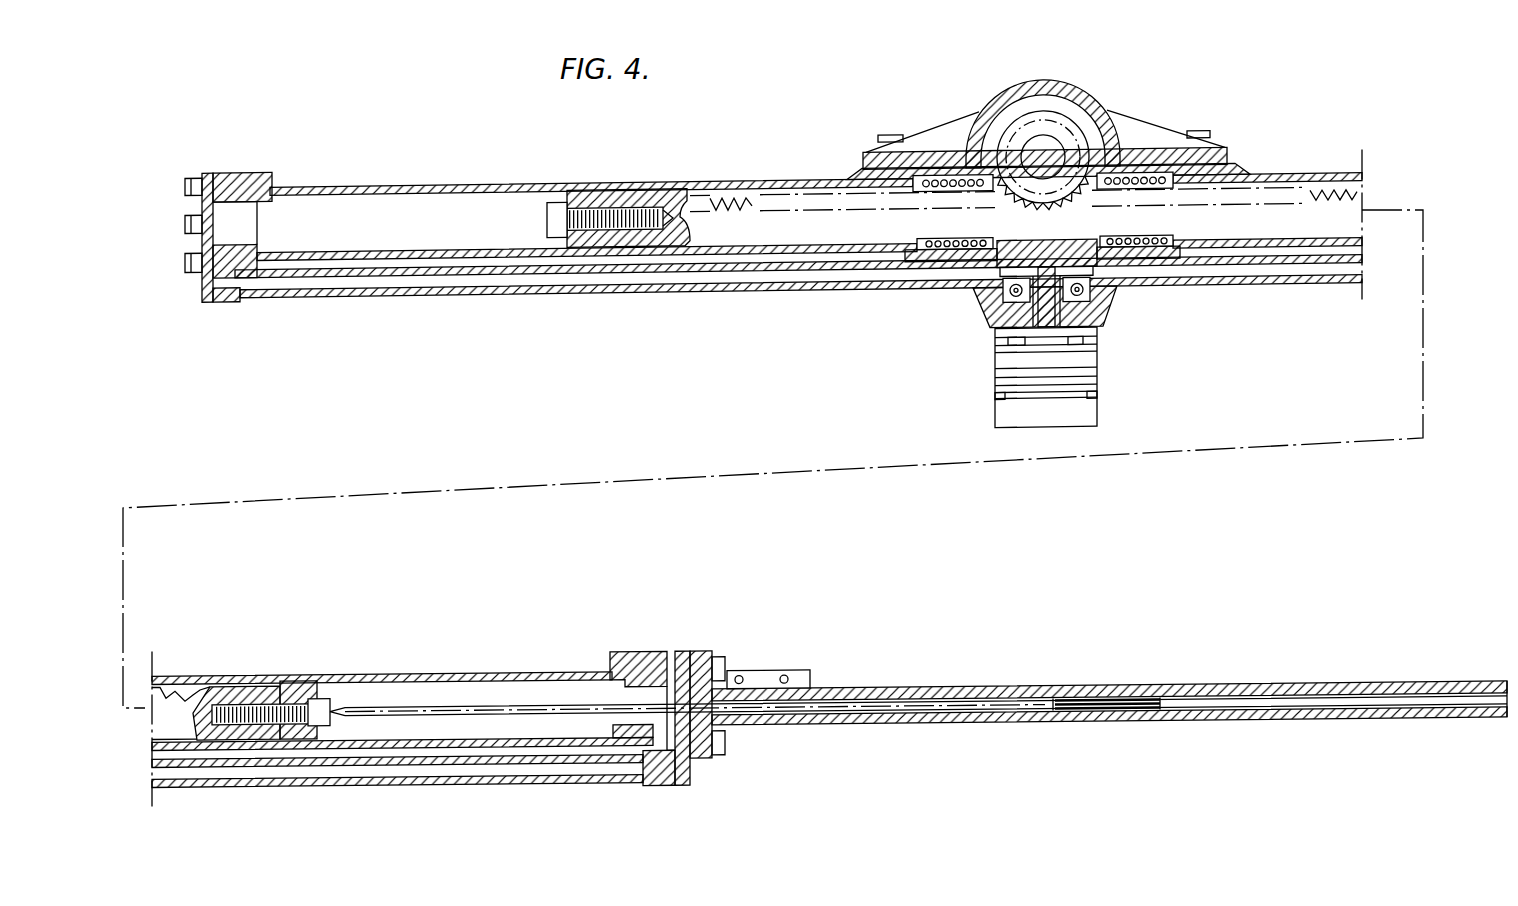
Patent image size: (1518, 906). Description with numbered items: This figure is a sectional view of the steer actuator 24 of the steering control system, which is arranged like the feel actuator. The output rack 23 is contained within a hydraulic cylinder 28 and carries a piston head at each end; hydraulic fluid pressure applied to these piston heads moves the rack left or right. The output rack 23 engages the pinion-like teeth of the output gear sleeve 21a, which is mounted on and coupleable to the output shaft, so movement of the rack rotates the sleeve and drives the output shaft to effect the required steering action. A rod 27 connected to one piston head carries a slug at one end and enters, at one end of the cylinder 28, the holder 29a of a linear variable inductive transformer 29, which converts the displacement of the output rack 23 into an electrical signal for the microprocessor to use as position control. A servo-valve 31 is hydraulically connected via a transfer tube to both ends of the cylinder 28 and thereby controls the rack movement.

The gear output sleeve 21a is at (1020, 134).
The output rack 23 is at (997, 213).
The steer actuator 24 is at (1290, 161).
The rod 27 is at (405, 714).
The hydraulic cylinder 28 is at (500, 683).
The linear variable inductive transformer 29 is at (765, 735).
The holder 29a is at (968, 730).
The servo-valve 31 is at (995, 385).